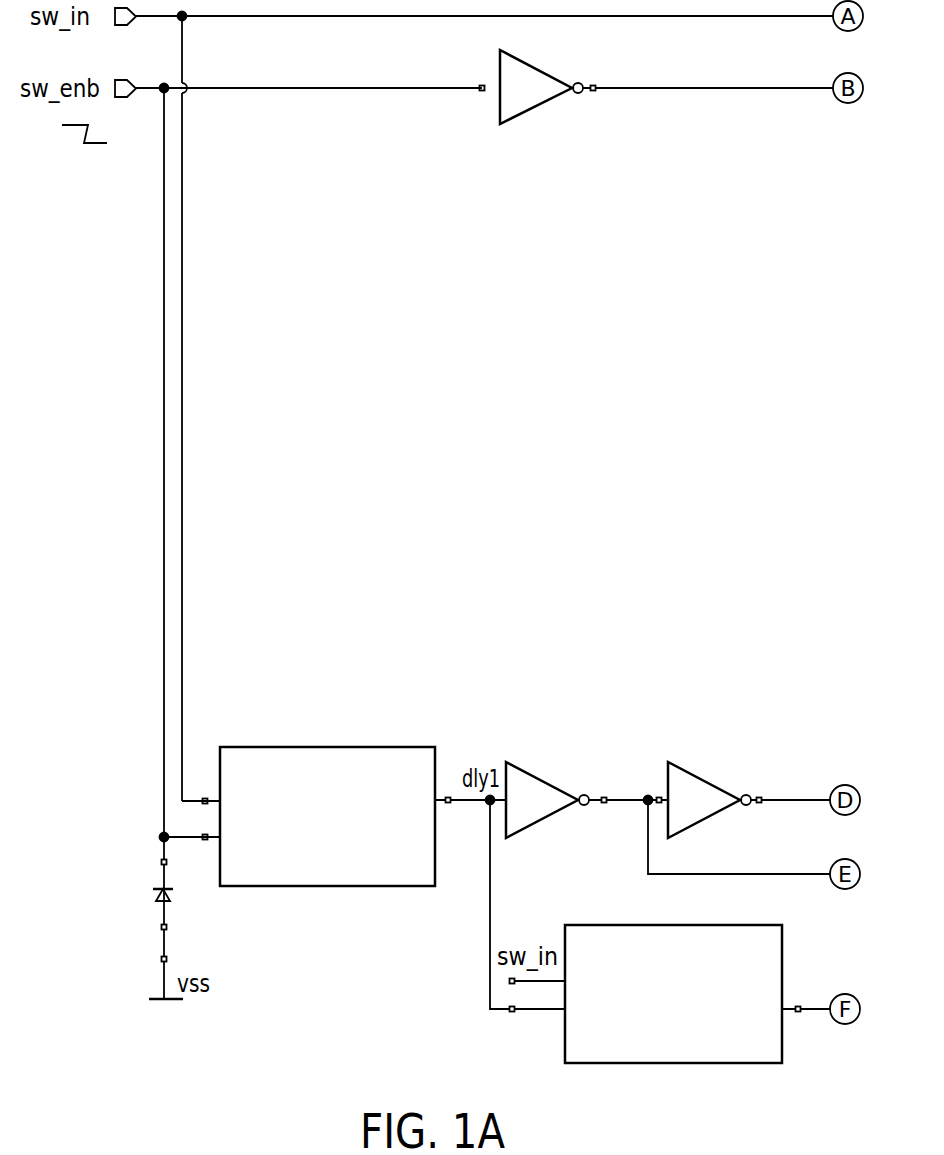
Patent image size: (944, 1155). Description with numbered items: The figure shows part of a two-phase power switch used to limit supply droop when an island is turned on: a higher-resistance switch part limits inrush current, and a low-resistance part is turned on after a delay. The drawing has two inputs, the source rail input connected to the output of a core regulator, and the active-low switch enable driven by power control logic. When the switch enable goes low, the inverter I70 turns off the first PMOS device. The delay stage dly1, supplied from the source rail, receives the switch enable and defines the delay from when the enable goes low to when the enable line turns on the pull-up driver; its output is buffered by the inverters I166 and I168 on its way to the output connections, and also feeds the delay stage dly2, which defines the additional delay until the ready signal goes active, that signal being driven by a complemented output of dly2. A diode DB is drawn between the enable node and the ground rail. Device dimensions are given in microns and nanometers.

The inverter I70 is at (657, 87).
The delay stage dly1 is at (327, 816).
The diode DB is at (181, 925).
The inverter I166 is at (587, 800).
The inverter I168 is at (749, 800).
The delay stage dly2 is at (673, 994).